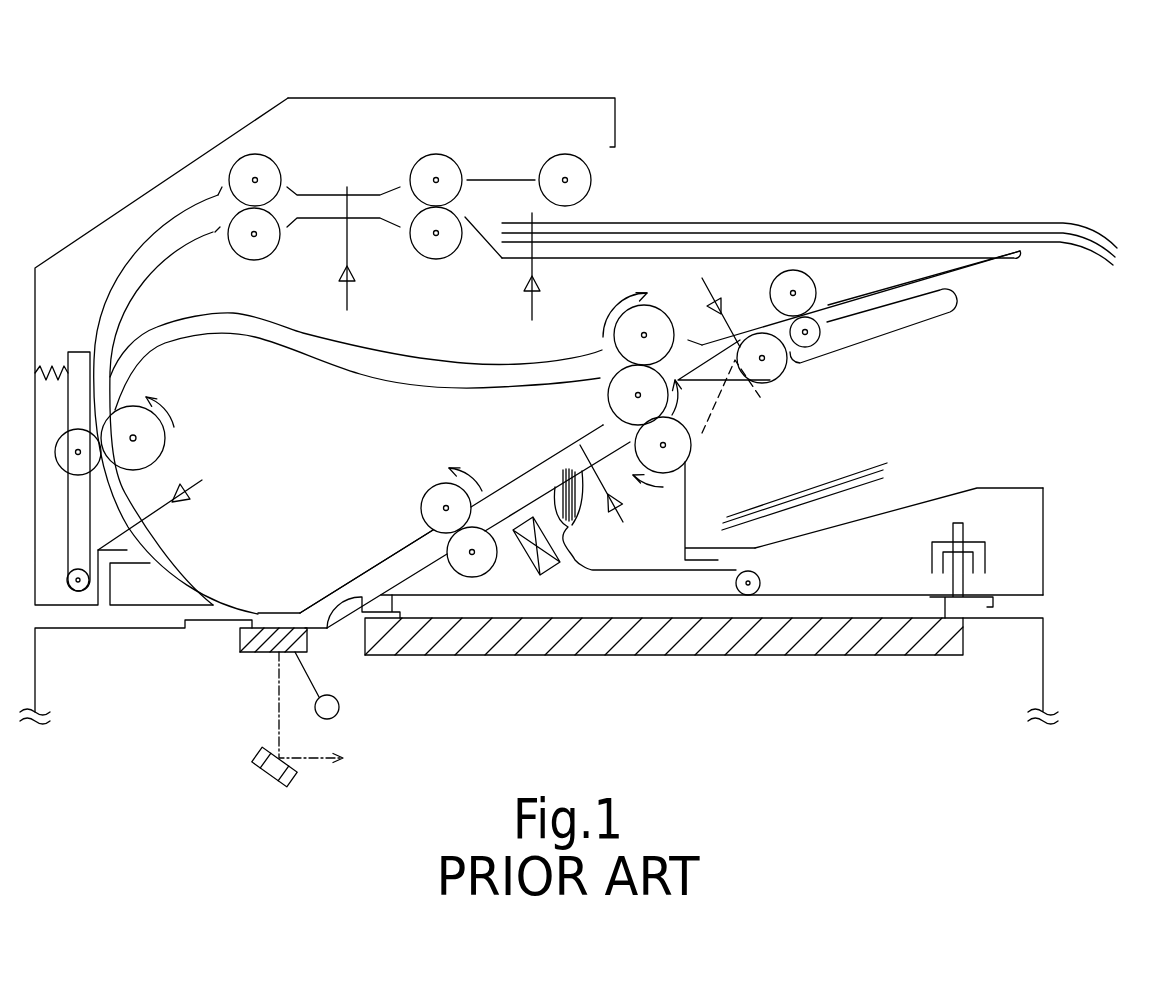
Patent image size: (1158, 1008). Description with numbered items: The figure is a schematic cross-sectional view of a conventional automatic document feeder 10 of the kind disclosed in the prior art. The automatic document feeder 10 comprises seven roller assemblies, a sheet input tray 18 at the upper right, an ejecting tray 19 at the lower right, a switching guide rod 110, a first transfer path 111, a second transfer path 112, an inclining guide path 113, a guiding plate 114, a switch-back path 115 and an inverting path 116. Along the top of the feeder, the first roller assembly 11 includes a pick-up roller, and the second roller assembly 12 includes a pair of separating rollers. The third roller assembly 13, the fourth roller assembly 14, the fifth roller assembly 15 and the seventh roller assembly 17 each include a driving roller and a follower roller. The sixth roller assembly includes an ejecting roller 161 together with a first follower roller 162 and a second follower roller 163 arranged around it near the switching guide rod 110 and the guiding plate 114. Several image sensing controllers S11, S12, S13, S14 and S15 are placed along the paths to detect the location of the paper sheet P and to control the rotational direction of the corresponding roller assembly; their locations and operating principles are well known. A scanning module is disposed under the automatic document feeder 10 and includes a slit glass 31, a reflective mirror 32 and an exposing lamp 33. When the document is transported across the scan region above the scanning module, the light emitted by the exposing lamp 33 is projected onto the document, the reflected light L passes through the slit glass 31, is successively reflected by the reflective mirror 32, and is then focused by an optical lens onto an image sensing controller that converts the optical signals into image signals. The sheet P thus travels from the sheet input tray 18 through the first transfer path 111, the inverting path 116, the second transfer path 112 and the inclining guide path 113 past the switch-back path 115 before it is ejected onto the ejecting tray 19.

The automatic document feeder 10 is at (1045, 85).
The first roller assembly 11 is at (560, 153).
The second roller assembly 12 is at (428, 153).
The third roller assembly 13 is at (248, 152).
The fourth roller assembly 14 is at (133, 403).
The fifth roller assembly 15 is at (497, 565).
The ejecting roller 161 is at (610, 400).
The first follower roller 162 is at (690, 447).
The second follower roller 163 is at (660, 306).
The seventh roller assembly 17 is at (812, 275).
The sheet input tray 18 is at (597, 256).
The ejecting tray 19 is at (928, 500).
The slit glass 31 is at (240, 642).
The reflective mirror 32 is at (263, 773).
The exposing lamp 33 is at (338, 710).
The switching guide rod 110 is at (727, 372).
The first transfer path 111 is at (150, 563).
The second transfer path 112 is at (402, 562).
The inclining guide path 113 is at (340, 632).
The guiding plate 114 is at (877, 323).
The switch-back path 115 is at (965, 272).
The inverting path 116 is at (257, 332).
The image sensing controller S11 is at (718, 297).
The image sensing controller S12 is at (523, 280).
The image sensing controller S13 is at (353, 277).
The image sensing controller S14 is at (181, 494).
The image sensing controller S15 is at (613, 503).
The paper P is at (990, 222).
The optical axis / light L is at (305, 760).